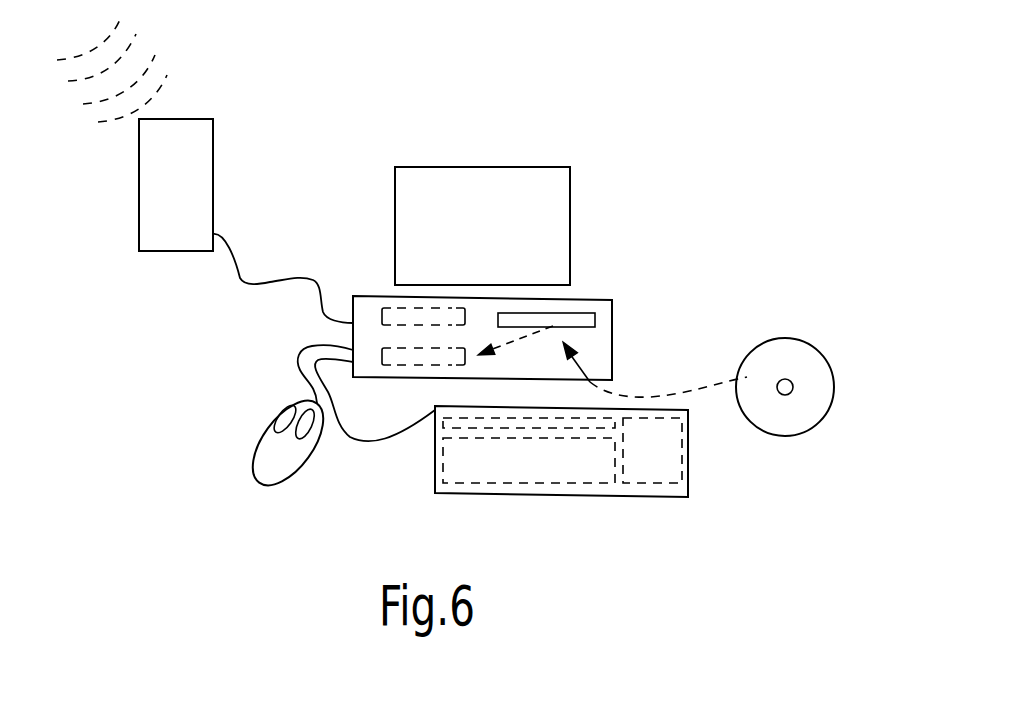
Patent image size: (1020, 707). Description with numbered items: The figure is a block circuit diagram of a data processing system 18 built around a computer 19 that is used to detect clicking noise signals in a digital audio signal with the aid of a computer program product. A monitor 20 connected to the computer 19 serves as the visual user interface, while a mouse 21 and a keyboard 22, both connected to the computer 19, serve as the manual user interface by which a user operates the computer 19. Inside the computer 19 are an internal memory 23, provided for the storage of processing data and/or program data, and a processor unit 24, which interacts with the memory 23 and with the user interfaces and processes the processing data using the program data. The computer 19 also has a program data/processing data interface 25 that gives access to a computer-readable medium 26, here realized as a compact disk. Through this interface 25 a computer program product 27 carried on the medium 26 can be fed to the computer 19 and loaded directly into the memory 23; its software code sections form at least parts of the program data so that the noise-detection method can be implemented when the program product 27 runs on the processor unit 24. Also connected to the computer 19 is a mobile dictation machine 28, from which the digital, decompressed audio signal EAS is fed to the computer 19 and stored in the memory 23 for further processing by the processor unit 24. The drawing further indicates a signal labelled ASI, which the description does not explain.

The data processing system 18 is at (665, 124).
The computer 19 is at (362, 315).
The monitor 20 is at (500, 180).
The mouse 21 is at (258, 488).
The keyboard 22 is at (607, 505).
The internal memory 23 is at (395, 360).
The processor unit 24 is at (400, 313).
The program data/processing data interface 25 is at (580, 314).
The computer-readable medium 26 is at (790, 352).
The computer program product 27 is at (643, 397).
The mobile dictation machine 28 is at (167, 233).
The aircraft status information signal ASI is at (166, 50).
The digital audio signal EAS is at (238, 279).